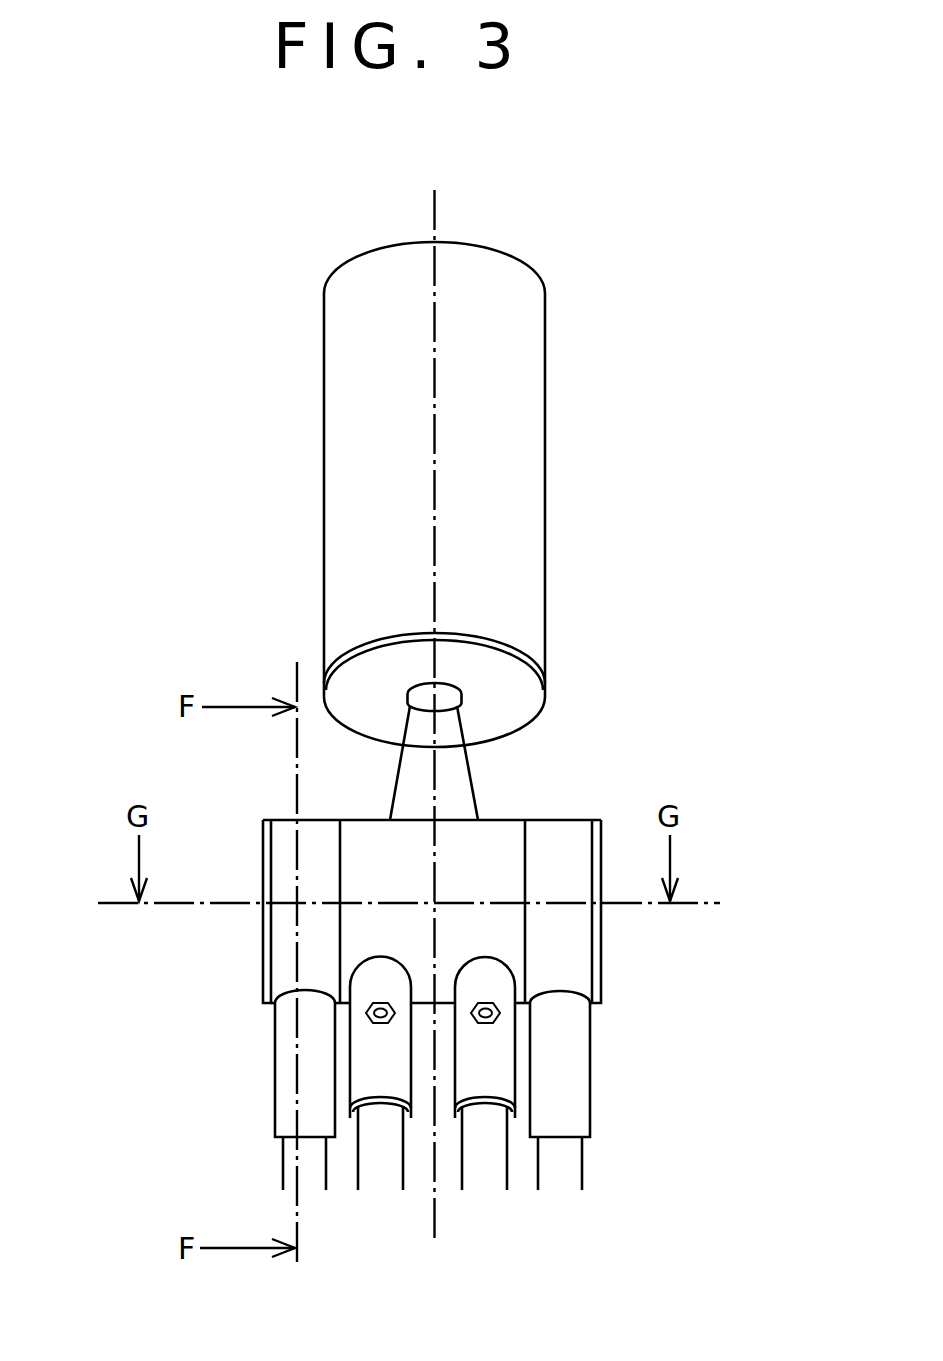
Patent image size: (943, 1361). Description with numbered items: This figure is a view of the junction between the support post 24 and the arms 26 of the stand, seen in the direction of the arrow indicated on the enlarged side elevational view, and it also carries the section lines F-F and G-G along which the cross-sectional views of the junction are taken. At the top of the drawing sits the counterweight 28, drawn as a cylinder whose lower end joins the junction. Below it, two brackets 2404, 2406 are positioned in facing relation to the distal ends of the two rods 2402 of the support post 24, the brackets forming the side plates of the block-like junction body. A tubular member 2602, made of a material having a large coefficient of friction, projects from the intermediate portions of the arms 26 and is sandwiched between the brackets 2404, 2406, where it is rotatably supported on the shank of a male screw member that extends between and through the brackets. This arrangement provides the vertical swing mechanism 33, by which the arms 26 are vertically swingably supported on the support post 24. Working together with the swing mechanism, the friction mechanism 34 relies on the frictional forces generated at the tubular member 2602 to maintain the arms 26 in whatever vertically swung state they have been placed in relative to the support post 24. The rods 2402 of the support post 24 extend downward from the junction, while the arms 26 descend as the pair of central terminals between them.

The counterweight 28 is at (525, 338).
The tubular member 2602 is at (490, 840).
The vertical swing mechanism 33 is at (352, 861).
The friction mechanism 34 is at (352, 861).
The bracket 2404 is at (285, 820).
The bracket 2406 is at (568, 820).
The support post 24 is at (431, 1095).
The rod 2402 is at (283, 1170).
The arm 26 is at (403, 1165).